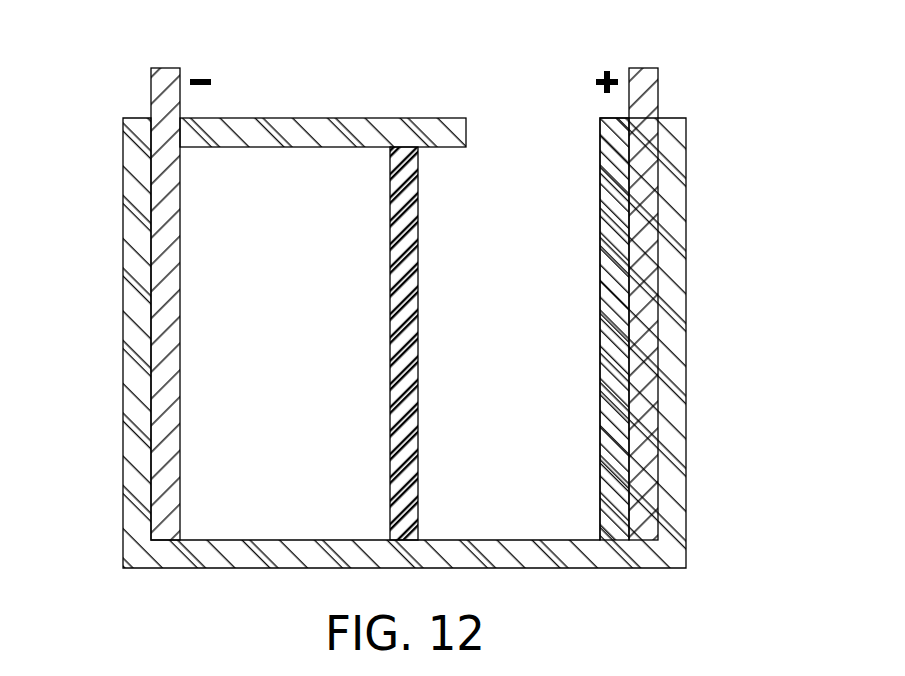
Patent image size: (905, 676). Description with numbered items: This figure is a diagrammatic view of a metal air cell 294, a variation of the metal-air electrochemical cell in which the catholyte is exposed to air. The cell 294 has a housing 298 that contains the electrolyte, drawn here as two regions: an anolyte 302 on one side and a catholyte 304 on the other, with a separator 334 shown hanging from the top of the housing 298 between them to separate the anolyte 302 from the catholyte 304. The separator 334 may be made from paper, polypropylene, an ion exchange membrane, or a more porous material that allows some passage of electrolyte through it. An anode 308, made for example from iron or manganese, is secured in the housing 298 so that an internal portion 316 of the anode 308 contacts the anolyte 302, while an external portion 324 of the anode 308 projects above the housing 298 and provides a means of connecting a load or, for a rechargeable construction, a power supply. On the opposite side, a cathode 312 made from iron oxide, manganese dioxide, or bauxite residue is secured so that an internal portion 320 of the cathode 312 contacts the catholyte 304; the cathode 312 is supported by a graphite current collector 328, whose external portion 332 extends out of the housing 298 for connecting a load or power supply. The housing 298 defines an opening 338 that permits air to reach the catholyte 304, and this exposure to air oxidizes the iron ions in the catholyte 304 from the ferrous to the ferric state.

The metal air cell 294 is at (441, 294).
The housing 298 is at (133, 332).
The anolyte 302 is at (310, 351).
The catholyte 304 is at (532, 351).
The anode 308 is at (170, 405).
The cathode 312 is at (615, 425).
The internal portion of the anode 316 is at (168, 475).
The internal portion of the cathode 320 is at (615, 473).
The external portion of the anode 324 is at (152, 93).
The current collector 328 is at (640, 337).
The external portion of the current collector 332 is at (658, 92).
The separator 334 is at (388, 167).
The opening 338 is at (512, 93).